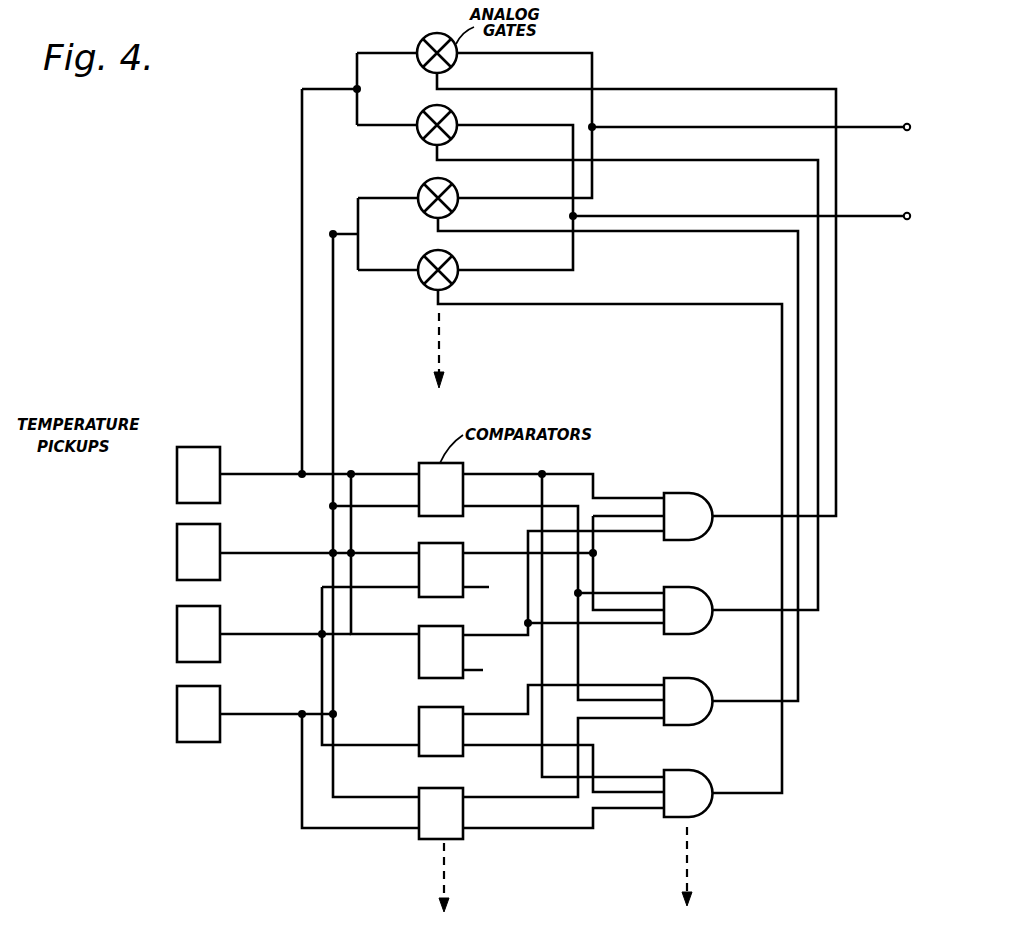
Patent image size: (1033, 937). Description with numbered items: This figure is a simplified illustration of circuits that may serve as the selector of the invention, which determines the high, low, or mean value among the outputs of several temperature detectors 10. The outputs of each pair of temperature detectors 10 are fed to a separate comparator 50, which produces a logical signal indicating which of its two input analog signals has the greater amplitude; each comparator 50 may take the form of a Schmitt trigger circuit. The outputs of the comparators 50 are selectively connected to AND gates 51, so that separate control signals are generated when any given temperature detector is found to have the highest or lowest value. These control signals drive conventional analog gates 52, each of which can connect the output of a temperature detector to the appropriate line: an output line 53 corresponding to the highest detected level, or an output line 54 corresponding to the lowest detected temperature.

The temperature detector 10 is at (198, 594).
The comparator 50 is at (441, 651).
The AND gate 51 is at (712, 502).
The analog gate 52 is at (421, 113).
The output line 53 is at (877, 128).
The output line 54 is at (868, 220).